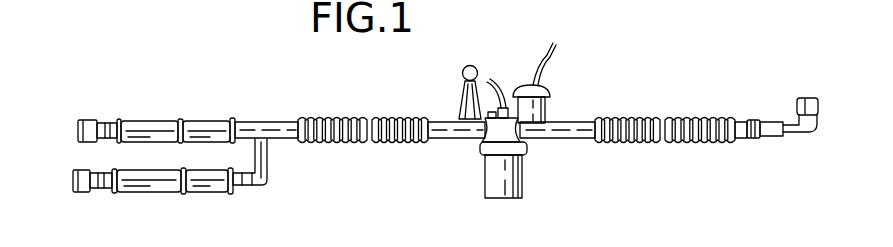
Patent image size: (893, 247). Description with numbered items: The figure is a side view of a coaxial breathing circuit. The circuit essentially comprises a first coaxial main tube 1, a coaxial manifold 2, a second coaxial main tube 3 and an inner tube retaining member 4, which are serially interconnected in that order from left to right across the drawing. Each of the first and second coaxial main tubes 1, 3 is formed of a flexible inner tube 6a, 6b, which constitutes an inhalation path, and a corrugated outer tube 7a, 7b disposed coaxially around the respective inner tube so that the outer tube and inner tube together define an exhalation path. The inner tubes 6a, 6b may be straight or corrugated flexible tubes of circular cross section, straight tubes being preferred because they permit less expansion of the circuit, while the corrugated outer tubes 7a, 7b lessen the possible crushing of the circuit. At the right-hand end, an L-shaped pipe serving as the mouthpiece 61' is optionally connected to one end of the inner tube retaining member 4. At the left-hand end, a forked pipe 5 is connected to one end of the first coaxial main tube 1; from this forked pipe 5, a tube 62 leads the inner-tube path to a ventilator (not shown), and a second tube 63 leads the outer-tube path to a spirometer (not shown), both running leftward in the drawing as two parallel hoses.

The first coaxial main tube 1 is at (338, 109).
The coaxial manifold 2 is at (568, 150).
The second coaxial main tube 3 is at (648, 110).
The inner tube retaining member 4 is at (763, 147).
The forked pipe 5 is at (284, 154).
The flexible inner tube 6a is at (335, 142).
The flexible inner tube 6b is at (688, 145).
The corrugated outer tube 7a is at (395, 118).
The corrugated outer tube 7b is at (703, 117).
The mouthpiece (L-shaped pipe) 61' is at (800, 137).
The tube 62 is at (206, 121).
The tube 63 is at (213, 183).